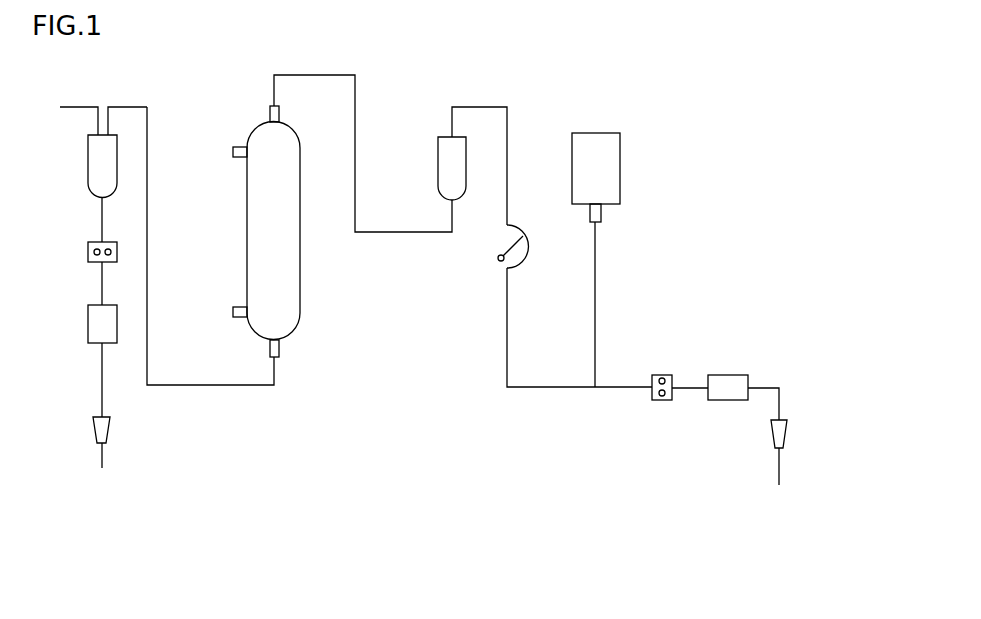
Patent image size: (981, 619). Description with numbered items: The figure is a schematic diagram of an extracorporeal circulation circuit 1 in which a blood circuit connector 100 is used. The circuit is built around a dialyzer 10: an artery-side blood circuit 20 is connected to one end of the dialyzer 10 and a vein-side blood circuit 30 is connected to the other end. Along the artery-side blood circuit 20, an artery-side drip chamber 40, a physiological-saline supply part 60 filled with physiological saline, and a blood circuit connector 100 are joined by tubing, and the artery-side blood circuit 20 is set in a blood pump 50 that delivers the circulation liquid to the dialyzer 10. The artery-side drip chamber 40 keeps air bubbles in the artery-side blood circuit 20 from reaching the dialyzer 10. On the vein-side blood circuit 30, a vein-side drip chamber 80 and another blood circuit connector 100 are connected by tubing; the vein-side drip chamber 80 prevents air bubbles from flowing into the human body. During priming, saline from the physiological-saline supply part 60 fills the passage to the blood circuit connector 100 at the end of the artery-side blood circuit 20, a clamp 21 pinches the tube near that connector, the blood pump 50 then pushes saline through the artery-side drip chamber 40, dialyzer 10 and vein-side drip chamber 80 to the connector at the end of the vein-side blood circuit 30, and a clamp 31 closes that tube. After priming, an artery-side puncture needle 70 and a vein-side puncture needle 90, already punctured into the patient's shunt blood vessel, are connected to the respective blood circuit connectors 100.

The extracorporeal circulation circuit 1 is at (705, 117).
The dialyzer 10 is at (300, 295).
The artery-side blood circuit 20 is at (506, 340).
The clamp 21 is at (663, 375).
The vein-side blood circuit 30 is at (187, 385).
The clamp 31 is at (88, 254).
The artery-side drip chamber 40 is at (438, 165).
The blood pump 50 is at (505, 240).
The physiological-saline supply part 60 is at (620, 168).
The artery-side puncture needle 70 is at (779, 465).
The vein-side drip chamber 80 is at (88, 165).
The vein-side puncture needle 90 is at (102, 460).
The blood circuit connector 100 is at (88, 322).